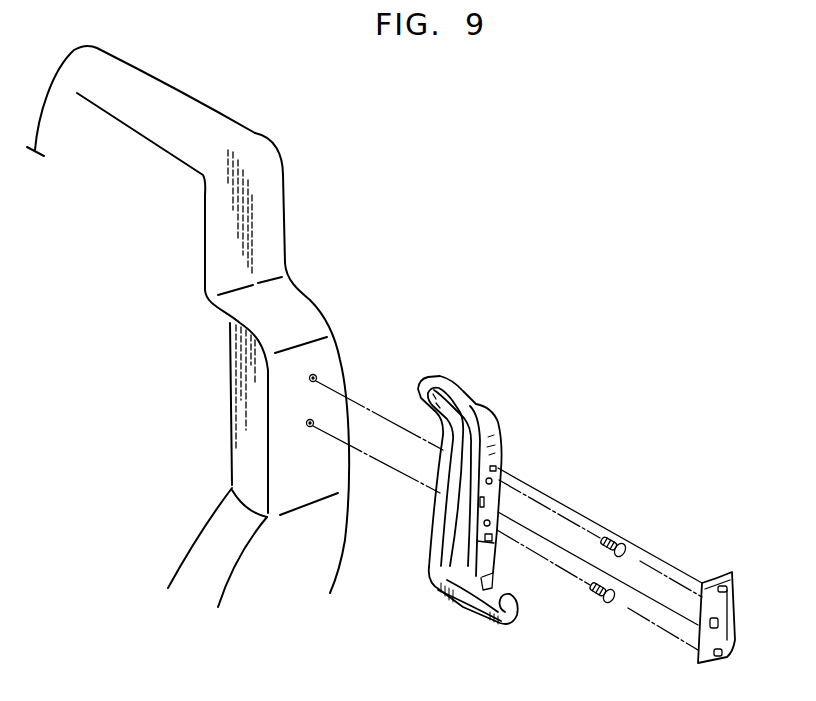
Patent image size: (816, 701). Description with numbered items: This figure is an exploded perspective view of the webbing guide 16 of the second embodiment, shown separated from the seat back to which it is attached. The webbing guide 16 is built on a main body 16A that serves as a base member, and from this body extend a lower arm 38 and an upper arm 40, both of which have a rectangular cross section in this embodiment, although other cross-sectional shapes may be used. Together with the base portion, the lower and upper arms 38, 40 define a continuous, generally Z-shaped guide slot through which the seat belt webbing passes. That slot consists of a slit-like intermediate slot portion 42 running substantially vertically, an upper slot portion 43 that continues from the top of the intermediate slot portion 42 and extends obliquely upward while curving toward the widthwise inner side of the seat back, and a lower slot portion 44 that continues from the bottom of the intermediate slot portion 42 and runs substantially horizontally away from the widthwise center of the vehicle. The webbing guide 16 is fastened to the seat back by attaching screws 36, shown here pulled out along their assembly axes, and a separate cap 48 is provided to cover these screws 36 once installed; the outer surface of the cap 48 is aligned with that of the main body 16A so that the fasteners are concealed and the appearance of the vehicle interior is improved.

The webbing guide 16 is at (488, 492).
The main body 16A is at (498, 447).
The attaching screws 36 is at (627, 543).
The lower arm 38 is at (518, 610).
The upper arm 40 is at (470, 418).
The intermediate slot portion 42 is at (457, 473).
The upper slot portion 43 is at (448, 413).
The lower slot portion 44 is at (455, 602).
The cap 48 is at (728, 615).